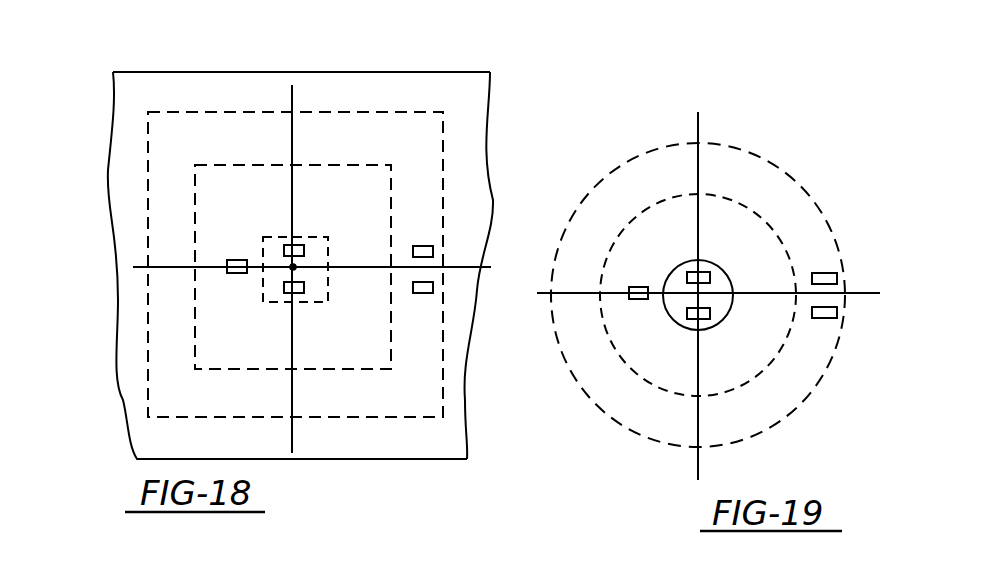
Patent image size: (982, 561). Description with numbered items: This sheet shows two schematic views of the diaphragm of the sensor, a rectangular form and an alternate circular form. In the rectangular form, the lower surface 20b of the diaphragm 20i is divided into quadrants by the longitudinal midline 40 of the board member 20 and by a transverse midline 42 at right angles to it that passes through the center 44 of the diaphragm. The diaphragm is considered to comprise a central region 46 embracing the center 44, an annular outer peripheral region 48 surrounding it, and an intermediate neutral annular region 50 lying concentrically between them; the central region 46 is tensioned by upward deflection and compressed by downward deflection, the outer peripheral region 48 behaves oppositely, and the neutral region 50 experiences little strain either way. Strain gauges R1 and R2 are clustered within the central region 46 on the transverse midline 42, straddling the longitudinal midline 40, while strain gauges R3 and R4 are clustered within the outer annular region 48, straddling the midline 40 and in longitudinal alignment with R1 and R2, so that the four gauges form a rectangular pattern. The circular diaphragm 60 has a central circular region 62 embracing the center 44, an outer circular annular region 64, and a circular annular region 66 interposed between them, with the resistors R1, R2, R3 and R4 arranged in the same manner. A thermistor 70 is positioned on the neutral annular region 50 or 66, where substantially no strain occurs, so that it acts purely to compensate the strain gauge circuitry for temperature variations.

In FIG. 18, the board member 20 is at (468, 70).
In FIG. 18, the diaphragm 20i is at (350, 150).
In FIG. 18, the lower surface 20b is at (400, 448).
In FIG. 18, the longitudinal midline 40 is at (145, 268).
In FIG. 19, the longitudinal midline 40 is at (563, 296).
In FIG. 18, the transverse midline 42 is at (292, 92).
In FIG. 19, the transverse midline 42 is at (699, 132).
In FIG. 18, the center 44 is at (294, 267).
In FIG. 19, the center 44 is at (716, 292).
In FIG. 18, the central region 46 is at (268, 254).
In FIG. 18, the annular outer peripheral region 48 is at (444, 168).
In FIG. 18, the intermediate neutral annular region 50 is at (215, 165).
In FIG. 19, the circular diaphragm 60 is at (792, 159).
In FIG. 19, the central circular region 62 is at (676, 306).
In FIG. 19, the outer circular annular region 64 is at (789, 196).
In FIG. 19, the circular annular region 66 is at (757, 237).
In FIG. 18, the thermistor 70 is at (235, 273).
In FIG. 19, the thermistor 70 is at (638, 287).
In FIG. 18, the strain gauge R1 is at (297, 236).
In FIG. 19, the strain gauge R1 is at (718, 261).
In FIG. 18, the strain gauge R2 is at (294, 305).
In FIG. 19, the strain gauge R2 is at (719, 339).
In FIG. 18, the strain gauge R3 is at (415, 312).
In FIG. 19, the strain gauge R3 is at (815, 339).
In FIG. 18, the strain gauge R4 is at (415, 235).
In FIG. 19, the strain gauge R4 is at (818, 262).